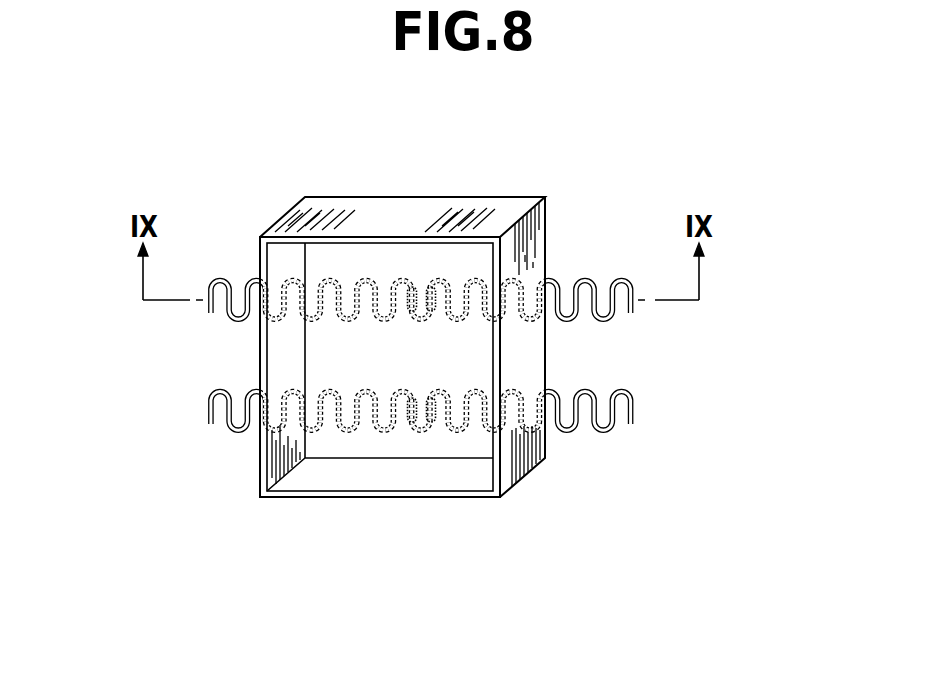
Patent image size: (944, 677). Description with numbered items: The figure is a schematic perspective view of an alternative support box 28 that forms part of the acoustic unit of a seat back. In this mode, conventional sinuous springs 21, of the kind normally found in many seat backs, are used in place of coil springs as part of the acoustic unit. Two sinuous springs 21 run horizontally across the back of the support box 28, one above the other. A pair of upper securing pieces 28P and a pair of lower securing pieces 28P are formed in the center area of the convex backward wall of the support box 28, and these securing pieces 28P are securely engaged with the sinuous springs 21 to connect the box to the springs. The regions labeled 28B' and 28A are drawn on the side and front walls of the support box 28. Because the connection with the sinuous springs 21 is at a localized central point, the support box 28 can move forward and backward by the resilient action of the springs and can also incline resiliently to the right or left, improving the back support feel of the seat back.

The support box 28 is at (351, 214).
The securing pieces 28P is at (409, 288).
The side walls of cover 28B' is at (390, 304).
The front wall of cover 28A is at (260, 466).
The sinuous springs 21 is at (600, 321).